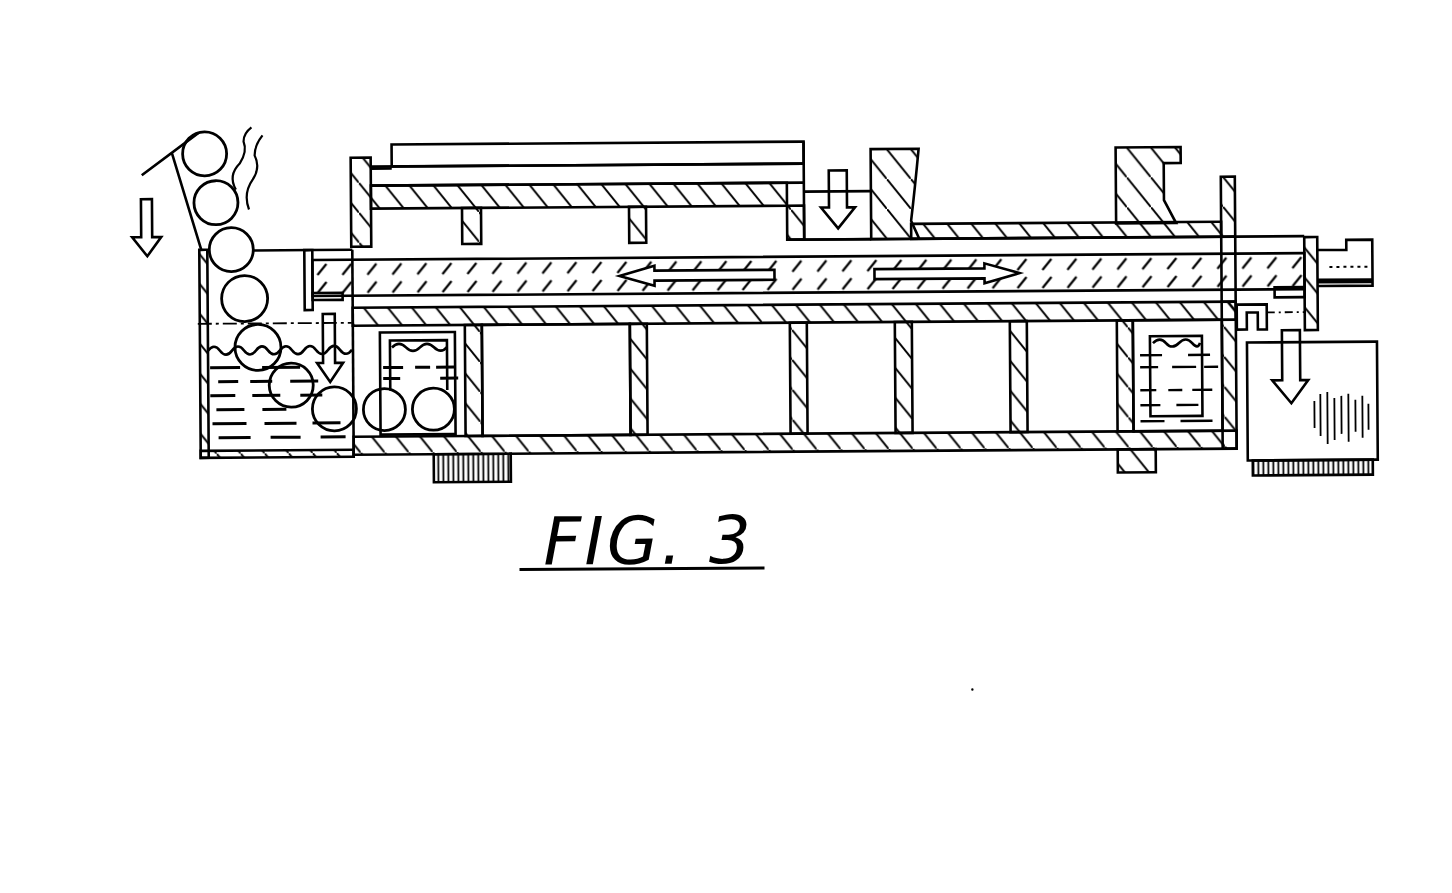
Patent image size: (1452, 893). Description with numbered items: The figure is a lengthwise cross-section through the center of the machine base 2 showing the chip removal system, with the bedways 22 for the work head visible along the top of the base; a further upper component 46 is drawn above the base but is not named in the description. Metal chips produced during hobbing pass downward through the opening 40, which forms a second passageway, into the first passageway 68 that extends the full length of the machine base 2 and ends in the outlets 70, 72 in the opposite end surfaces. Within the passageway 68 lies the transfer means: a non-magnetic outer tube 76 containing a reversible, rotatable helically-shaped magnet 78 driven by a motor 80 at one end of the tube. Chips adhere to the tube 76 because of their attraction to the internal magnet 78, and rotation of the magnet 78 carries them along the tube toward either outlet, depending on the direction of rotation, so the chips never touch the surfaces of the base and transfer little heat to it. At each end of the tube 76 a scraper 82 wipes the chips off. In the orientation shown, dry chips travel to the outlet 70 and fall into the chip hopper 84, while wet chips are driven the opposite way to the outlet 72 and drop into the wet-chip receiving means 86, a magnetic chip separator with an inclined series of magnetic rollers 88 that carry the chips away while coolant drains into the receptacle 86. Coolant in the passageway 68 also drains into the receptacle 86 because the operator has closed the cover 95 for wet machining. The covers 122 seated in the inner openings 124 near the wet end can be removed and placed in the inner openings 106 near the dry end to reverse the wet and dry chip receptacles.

The machine base 2 is at (1228, 158).
The bedways 22 is at (1150, 151).
The opening 40 is at (834, 172).
The heater / top cover 46 is at (450, 142).
The first passageway 68 is at (1010, 250).
The outlet 70 is at (1238, 242).
The outlet 72 is at (351, 247).
The non-magnetic outer tube 76 is at (1278, 254).
The helically-shaped magnet 78 is at (1093, 220).
The motor 80 is at (1378, 280).
The scraper means 82 is at (308, 266).
The chip hopper 84 is at (1378, 400).
The wet-chip receiving means 86 is at (200, 294).
The magnetic rollers 88 is at (218, 130).
The cover 95 is at (1302, 352).
The inner openings 106 is at (1130, 349).
The covers 122 is at (483, 380).
The inner openings 124 is at (489, 337).